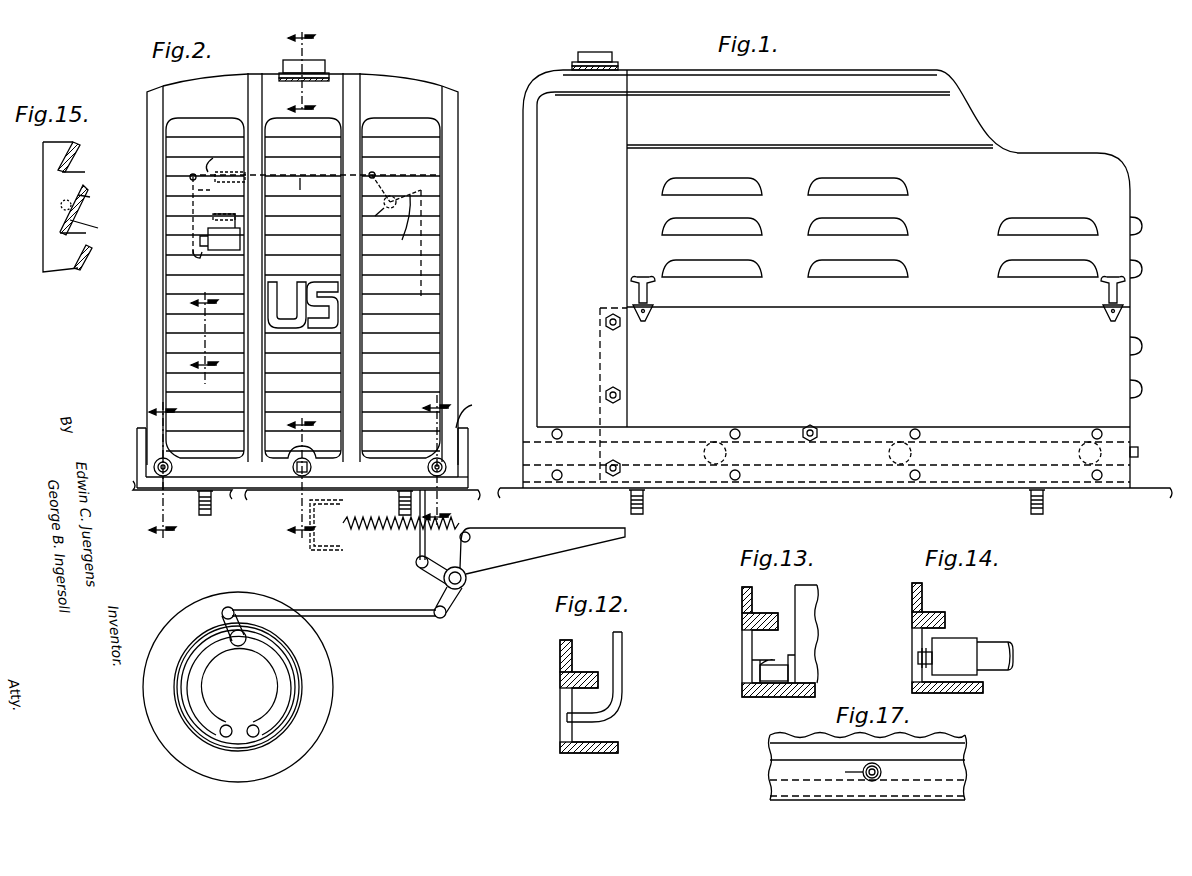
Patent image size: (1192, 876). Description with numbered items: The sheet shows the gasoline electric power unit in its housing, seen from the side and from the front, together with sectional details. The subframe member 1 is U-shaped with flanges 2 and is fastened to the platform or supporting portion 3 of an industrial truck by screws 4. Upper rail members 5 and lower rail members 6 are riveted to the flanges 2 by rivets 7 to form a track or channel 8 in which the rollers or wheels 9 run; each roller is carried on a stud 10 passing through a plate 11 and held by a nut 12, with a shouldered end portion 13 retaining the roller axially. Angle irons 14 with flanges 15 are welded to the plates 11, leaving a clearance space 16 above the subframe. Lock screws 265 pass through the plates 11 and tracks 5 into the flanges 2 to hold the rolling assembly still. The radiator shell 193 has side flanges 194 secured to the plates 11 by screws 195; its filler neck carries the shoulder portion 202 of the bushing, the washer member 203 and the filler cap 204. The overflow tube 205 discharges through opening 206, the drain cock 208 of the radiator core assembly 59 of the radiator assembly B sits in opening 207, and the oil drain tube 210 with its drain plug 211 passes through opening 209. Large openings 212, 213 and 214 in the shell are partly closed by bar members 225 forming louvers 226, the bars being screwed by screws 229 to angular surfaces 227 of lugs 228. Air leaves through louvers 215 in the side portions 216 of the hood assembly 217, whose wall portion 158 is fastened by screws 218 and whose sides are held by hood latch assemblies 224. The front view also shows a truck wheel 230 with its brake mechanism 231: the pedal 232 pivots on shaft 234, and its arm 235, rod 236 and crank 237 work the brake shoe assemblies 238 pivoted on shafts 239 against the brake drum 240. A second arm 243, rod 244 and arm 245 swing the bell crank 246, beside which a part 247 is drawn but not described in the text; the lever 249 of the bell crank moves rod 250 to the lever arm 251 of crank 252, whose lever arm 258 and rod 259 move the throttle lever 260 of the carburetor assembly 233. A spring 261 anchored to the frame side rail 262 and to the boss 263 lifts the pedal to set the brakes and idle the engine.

In FIG. 2, the subframe member 1 is at (240, 500).
In FIG. 1, the subframe member 1 is at (700, 490).
In FIG. 2, the flanges 2 is at (146, 428).
In FIG. 2, the platform or supporting portion 3 is at (478, 488).
In FIG. 1, the platform or supporting portion 3 is at (512, 488).
In FIG. 2, the screws 4 is at (212, 512).
In FIG. 1, the screws 4 is at (644, 505).
In FIG. 2, the upper rail members 5 is at (467, 407).
In FIG. 1, the upper rail members 5 is at (1010, 440).
In FIG. 17, the upper rail members 5 is at (962, 758).
In FIG. 2, the lower rail members 6 is at (462, 465).
In FIG. 1, the lower rail members 6 is at (995, 450).
In FIG. 17, the lower rail members 6 is at (962, 780).
In FIG. 1, the rivets 7 is at (560, 428).
In FIG. 17, the track or channel 8 is at (780, 780).
In FIG. 1, the rollers or wheels 9 is at (708, 440).
In FIG. 17, the rollers or wheels 9 is at (847, 772).
In FIG. 17, the studs 10 is at (882, 772).
In FIG. 1, the plates 11 is at (957, 300).
In FIG. 17, the plates 11 is at (778, 748).
In FIG. 2, the nuts 12 is at (162, 468).
In FIG. 2, the shouldered end portion 13 is at (301, 476).
In FIG. 2, the angle irons 14 is at (436, 456).
In FIG. 2, the flanges 15 is at (204, 334).
In FIG. 2, the clearance space 16 is at (301, 75).
In FIG. 13, the radiator core assembly 59 is at (817, 630).
In FIG. 13, the radiator assembly B is at (815, 590).
In FIG. 1, the wall portion 158 is at (1140, 290).
In FIG. 2, the radiator shell 193 is at (445, 232).
In FIG. 1, the radiator shell 193 is at (523, 110).
In FIG. 12, the radiator shell 193 is at (590, 753).
In FIG. 13, the radiator shell 193 is at (742, 612).
In FIG. 14, the radiator shell 193 is at (955, 693).
In FIG. 1, the side flanges 194 is at (560, 150).
In FIG. 1, the screws 195 is at (605, 328).
In FIG. 2, the shoulder portion 202 is at (330, 80).
In FIG. 1, the shoulder portion 202 is at (572, 68).
In FIG. 2, the washer member 203 is at (330, 73).
In FIG. 1, the washer member 203 is at (618, 64).
In FIG. 2, the filler cap 204 is at (327, 55).
In FIG. 1, the filler cap 204 is at (605, 50).
In FIG. 2, the overflow tube 205 is at (175, 470).
In FIG. 12, the overflow tube 205 is at (625, 683).
In FIG. 2, the opening 206 is at (178, 490).
In FIG. 12, the opening 206 is at (560, 680).
In FIG. 2, the opening 207 is at (312, 470).
In FIG. 13, the opening 207 is at (752, 632).
In FIG. 2, the drain cock 208 is at (298, 475).
In FIG. 13, the drain cock 208 is at (742, 697).
In FIG. 2, the opening 209 is at (460, 445).
In FIG. 14, the opening 209 is at (922, 632).
In FIG. 14, the oil drain tube 210 is at (1005, 640).
In FIG. 2, the pipe or drain plug 211 is at (428, 472).
In FIG. 14, the pipe or drain plug 211 is at (918, 662).
In FIG. 2, the opening 212 is at (442, 176).
In FIG. 2, the opening 213 is at (348, 123).
In FIG. 2, the opening 214 is at (222, 113).
In FIG. 1, the louvers 215 is at (710, 170).
In FIG. 1, the side portions 216 is at (1090, 165).
In FIG. 1, the hood assembly 217 is at (983, 112).
In FIG. 1, the screws 218 is at (1140, 447).
In FIG. 1, the hood latch assemblies 224 is at (655, 300).
In FIG. 2, the plates or bar members 225 is at (432, 128).
In FIG. 15, the plates or bar members 225 is at (78, 150).
In FIG. 15, the louvers or openings 226 is at (50, 148).
In FIG. 15, the angular surfaces 227 is at (78, 208).
In FIG. 15, the lugs 228 is at (100, 191).
In FIG. 15, the screws 229 is at (94, 217).
In FIG. 2, the wheels 230 is at (333, 695).
In FIG. 2, the brake mechanism 231 is at (285, 675).
In FIG. 2, the pedal 232 is at (620, 540).
In FIG. 2, the carburetor assembly 233 is at (240, 240).
In FIG. 2, the shaft 234 is at (464, 588).
In FIG. 2, the arm 235 is at (437, 602).
In FIG. 2, the rod 236 is at (350, 605).
In FIG. 2, the crank or lever 237 is at (235, 608).
In FIG. 2, the brake shoe assemblies 238 is at (208, 670).
In FIG. 2, the shafts 239 is at (248, 752).
In FIG. 2, the brake drum 240 is at (296, 716).
In FIG. 2, the arm or lever 243 is at (420, 568).
In FIG. 2, the rod 244 is at (425, 361).
In FIG. 2, the arm 245 is at (392, 221).
In FIG. 2, the bell crank 246 is at (400, 182).
In FIG. 2, the arm 247 is at (375, 218).
In FIG. 2, the lever or arm 249 is at (378, 172).
In FIG. 2, the rod 250 is at (284, 191).
In FIG. 2, the lever arm 251 is at (230, 168).
In FIG. 2, the crank 252 is at (197, 155).
In FIG. 2, the lever arm 258 is at (182, 167).
In FIG. 2, the rod 259 is at (210, 216).
In FIG. 2, the throttle lever 260 is at (183, 264).
In FIG. 2, the spring or resilient member 261 is at (398, 540).
In FIG. 2, the frame side rail 262 is at (330, 550).
In FIG. 2, the boss 263 is at (472, 545).
In FIG. 1, the lock screws 265 is at (815, 440).